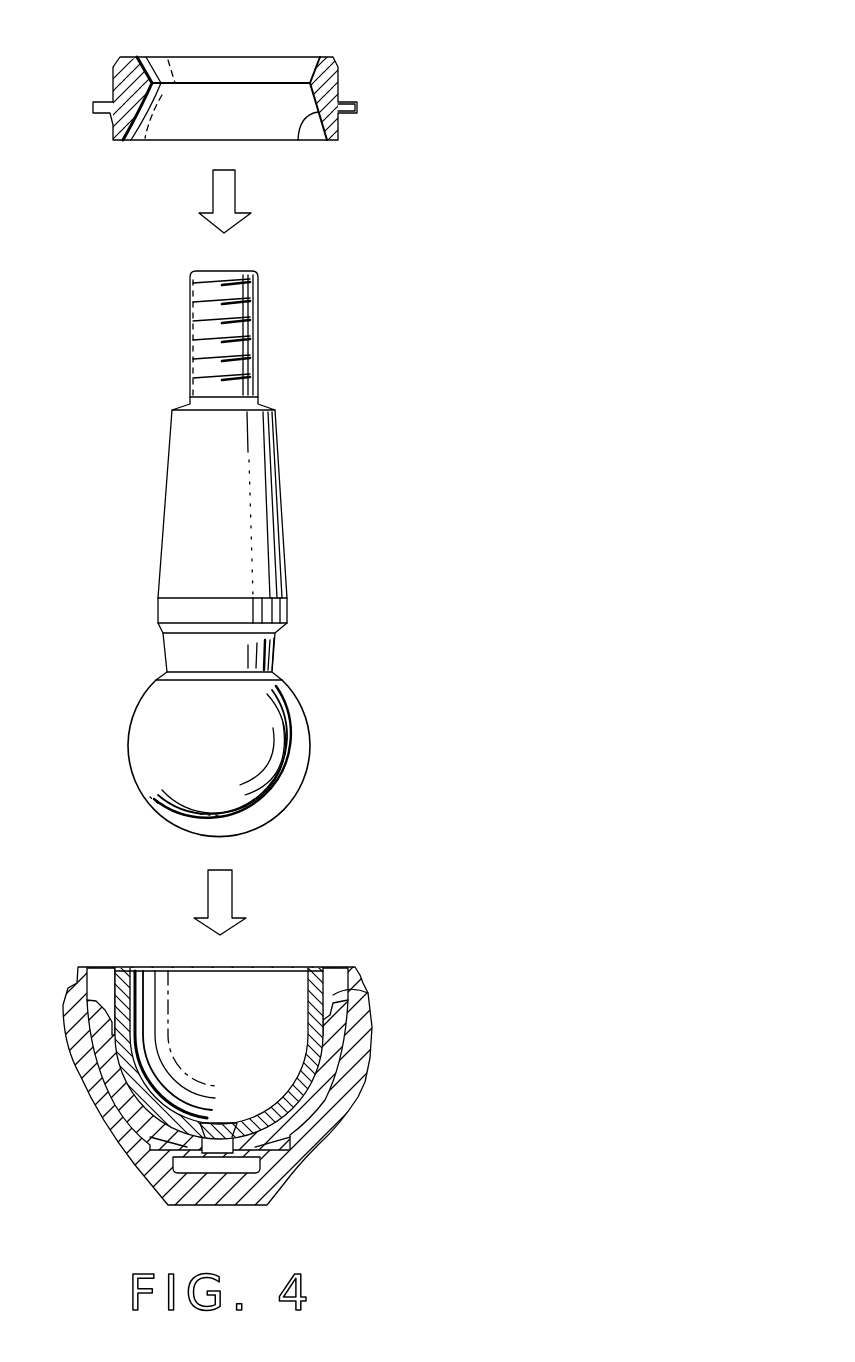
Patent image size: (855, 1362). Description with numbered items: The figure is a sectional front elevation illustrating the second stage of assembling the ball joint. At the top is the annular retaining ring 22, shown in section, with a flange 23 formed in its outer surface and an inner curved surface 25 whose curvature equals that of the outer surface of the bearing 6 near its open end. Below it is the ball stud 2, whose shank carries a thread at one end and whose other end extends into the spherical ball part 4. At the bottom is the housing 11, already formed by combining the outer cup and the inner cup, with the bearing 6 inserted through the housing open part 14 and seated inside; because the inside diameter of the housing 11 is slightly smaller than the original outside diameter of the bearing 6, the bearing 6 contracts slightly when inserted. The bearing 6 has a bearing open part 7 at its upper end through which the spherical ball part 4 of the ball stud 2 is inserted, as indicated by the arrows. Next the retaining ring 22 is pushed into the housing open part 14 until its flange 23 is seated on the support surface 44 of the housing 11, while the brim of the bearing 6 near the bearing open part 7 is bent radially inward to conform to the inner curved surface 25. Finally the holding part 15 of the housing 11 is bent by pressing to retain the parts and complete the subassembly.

The retaining ring 22 is at (362, 60).
The flange 23 is at (358, 112).
The inner curved surface 25 is at (299, 141).
The ball stud 2 is at (282, 489).
The spherical ball part 4 is at (313, 762).
The housing open part 14 is at (98, 972).
The bearing open part 7 is at (238, 983).
The bearing 6 is at (333, 967).
The holding part 15 is at (362, 980).
The support surface 44 is at (360, 988).
The housing 11 is at (358, 1093).